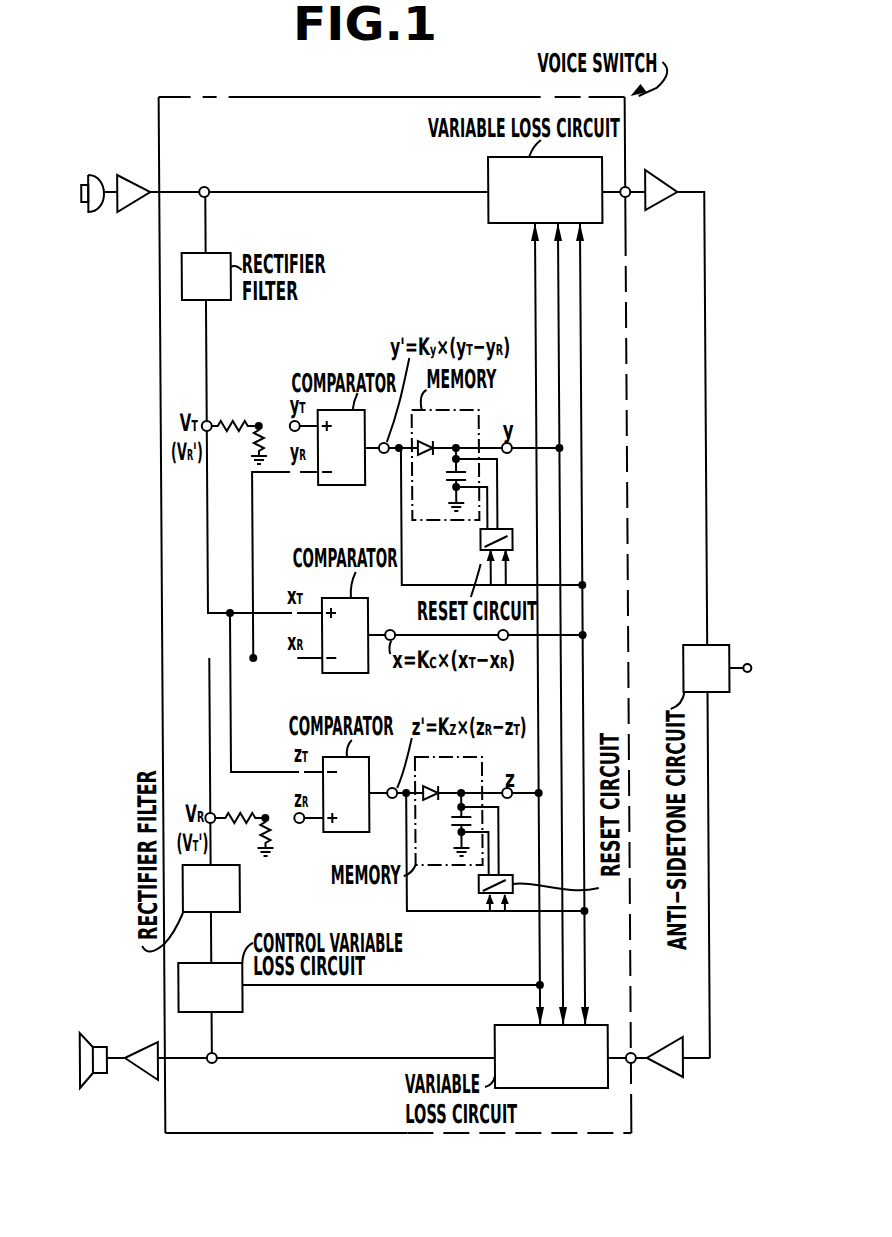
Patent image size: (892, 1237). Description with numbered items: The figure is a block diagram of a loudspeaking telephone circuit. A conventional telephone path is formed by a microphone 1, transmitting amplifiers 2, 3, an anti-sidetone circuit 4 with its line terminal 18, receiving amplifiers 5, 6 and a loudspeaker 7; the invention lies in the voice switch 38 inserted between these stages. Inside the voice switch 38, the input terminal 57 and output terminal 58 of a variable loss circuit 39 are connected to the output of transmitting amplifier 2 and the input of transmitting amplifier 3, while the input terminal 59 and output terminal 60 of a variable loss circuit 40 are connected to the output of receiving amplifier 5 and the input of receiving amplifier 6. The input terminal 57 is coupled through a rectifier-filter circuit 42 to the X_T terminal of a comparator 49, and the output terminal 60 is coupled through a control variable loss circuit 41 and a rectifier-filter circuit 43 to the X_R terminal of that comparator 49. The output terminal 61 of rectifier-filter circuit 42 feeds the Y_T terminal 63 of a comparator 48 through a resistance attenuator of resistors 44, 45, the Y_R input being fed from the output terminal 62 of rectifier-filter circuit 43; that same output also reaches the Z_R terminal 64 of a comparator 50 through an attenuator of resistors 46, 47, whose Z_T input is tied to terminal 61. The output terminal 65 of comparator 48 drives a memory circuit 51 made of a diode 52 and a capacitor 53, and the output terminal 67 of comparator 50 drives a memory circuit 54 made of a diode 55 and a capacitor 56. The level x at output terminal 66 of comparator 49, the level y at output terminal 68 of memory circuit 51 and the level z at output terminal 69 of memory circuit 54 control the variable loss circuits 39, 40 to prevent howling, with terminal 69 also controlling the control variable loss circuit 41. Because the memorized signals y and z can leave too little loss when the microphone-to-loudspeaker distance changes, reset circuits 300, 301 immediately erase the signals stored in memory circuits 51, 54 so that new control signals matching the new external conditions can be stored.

The microphone 1 is at (100, 176).
The transmitting amplifier 2 is at (134, 175).
The transmitting amplifier 3 is at (658, 182).
The anti-sidetone circuit 4 is at (713, 645).
The receiving amplifier 5 is at (658, 1042).
The receiving amplifier 6 is at (135, 1072).
The loudspeaker 7 is at (91, 1037).
The line terminal 18 is at (743, 673).
The voice switch 38 is at (626, 135).
The variable loss circuit 39 is at (487, 175).
The variable loss circuit 40 is at (494, 1023).
The control variable loss circuit 41 is at (236, 1013).
The rectifier-filter circuit 42 is at (217, 252).
The rectifier-filter circuit 43 is at (234, 888).
The resistor 44 is at (233, 418).
The resistor 45 is at (254, 450).
The resistor 46 is at (252, 790).
The resistor 47 is at (250, 838).
The comparator 48 is at (352, 485).
The comparator 49 is at (333, 675).
The comparator 50 is at (356, 758).
The memory circuit 51 is at (478, 422).
The diode 52 is at (433, 445).
The capacitor 53 is at (447, 473).
The memory circuit 54 is at (460, 866).
The diode 55 is at (433, 790).
The capacitor 56 is at (448, 822).
The input terminal 57 is at (214, 170).
The output terminal 58 is at (626, 198).
The input terminal 59 is at (625, 1064).
The output terminal 60 is at (203, 1064).
The output terminal 61 is at (206, 431).
The rectifier output node 62 is at (207, 824).
The comparator input terminal 63 is at (291, 420).
The comparator input terminal 64 is at (294, 824).
The output terminal 65 is at (381, 454).
The output terminal 66 is at (504, 639).
The output terminal 67 is at (389, 799).
The output terminal 68 is at (505, 454).
The output terminal 69 is at (503, 799).
The reset circuit 300 is at (477, 538).
The reset circuit 301 is at (517, 894).